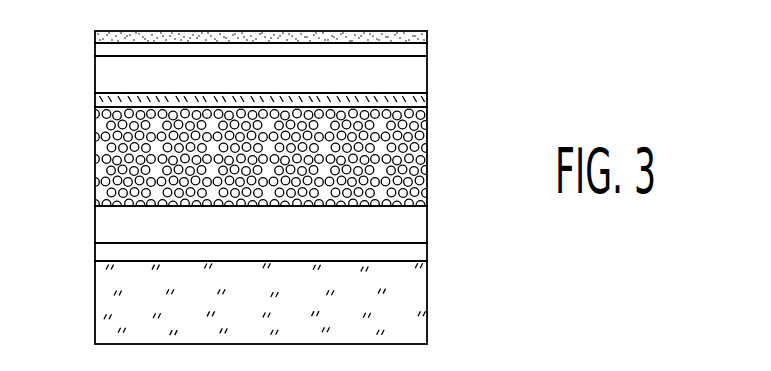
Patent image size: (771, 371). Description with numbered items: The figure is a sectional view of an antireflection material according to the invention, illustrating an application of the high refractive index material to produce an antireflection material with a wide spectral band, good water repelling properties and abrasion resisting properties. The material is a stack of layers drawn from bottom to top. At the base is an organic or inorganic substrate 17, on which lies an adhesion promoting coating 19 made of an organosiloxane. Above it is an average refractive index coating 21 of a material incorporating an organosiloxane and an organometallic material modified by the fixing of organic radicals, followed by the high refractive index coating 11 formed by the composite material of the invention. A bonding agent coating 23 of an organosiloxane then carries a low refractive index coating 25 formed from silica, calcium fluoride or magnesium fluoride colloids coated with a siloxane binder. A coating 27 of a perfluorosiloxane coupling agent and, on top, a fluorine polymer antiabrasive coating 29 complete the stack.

The fluorine polymer antiabrasive coating 29 is at (97, 33).
The coupling agent coating 27 is at (421, 49).
The low refractive index coating 25 is at (103, 74).
The bonding agent coating 23 is at (417, 102).
The high refractive index coating 11 is at (96, 150).
The average refractive index coating 21 is at (421, 229).
The adhesion promoting coating 19 is at (104, 252).
The substrate 17 is at (421, 307).